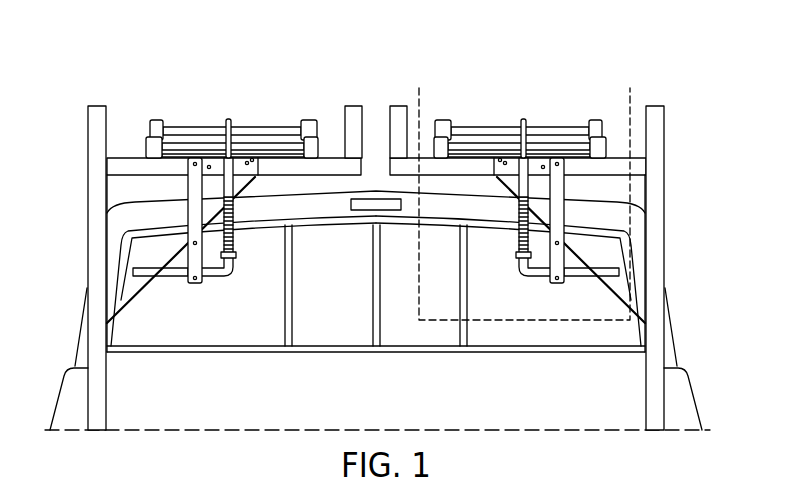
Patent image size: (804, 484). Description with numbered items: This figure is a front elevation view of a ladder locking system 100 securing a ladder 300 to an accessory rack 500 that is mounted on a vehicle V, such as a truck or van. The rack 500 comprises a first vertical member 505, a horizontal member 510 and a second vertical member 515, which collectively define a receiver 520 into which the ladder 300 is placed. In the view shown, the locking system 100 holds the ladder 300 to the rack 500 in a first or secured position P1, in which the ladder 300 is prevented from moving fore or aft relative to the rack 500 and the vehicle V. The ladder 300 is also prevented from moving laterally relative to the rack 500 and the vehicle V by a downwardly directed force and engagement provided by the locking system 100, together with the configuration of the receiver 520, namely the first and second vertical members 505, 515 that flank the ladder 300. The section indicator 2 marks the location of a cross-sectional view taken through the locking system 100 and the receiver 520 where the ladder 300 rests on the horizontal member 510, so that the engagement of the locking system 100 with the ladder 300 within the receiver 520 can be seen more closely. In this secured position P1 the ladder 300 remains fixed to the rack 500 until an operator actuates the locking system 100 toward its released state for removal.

The ladder locking system 100 is at (208, 102).
The ladder 300 is at (437, 127).
The accessory rack 500 is at (88, 128).
The first vertical member 505 is at (664, 208).
The horizontal member 510 is at (618, 160).
The second vertical member 515 is at (401, 106).
The receiver 520 is at (521, 70).
The first or secured position P1 is at (619, 57).
The vehicle V is at (56, 358).
The section line 2- 2 is at (419, 88).